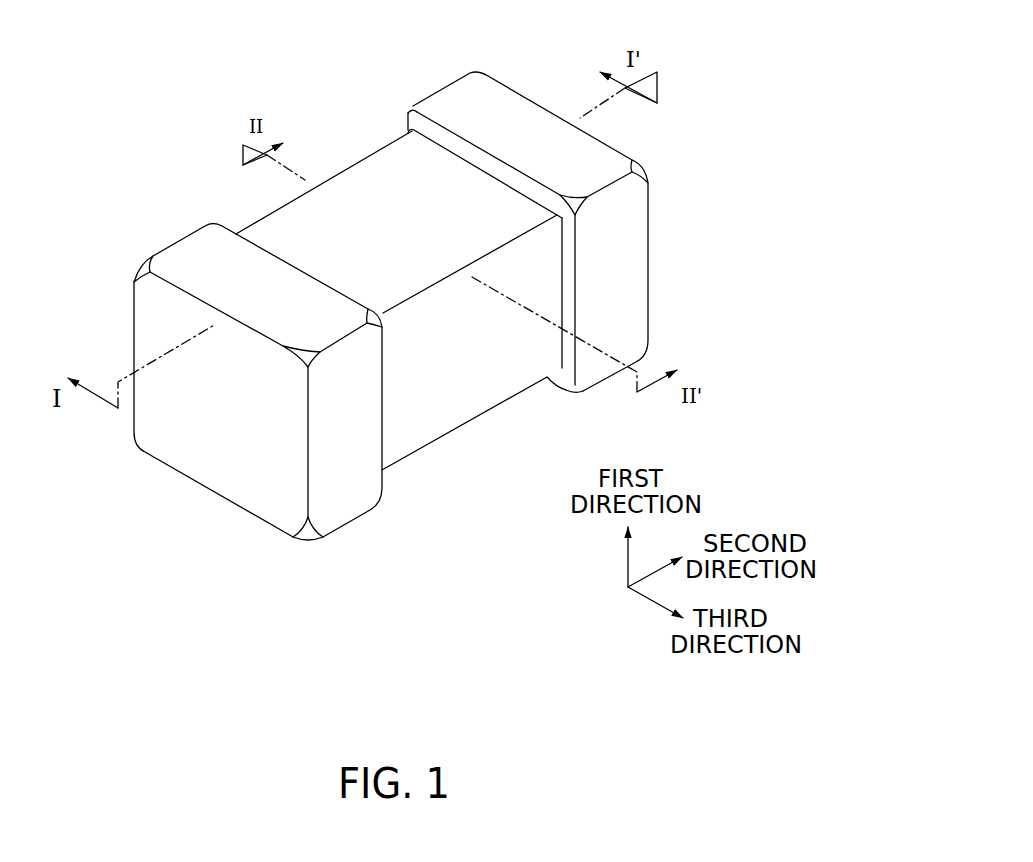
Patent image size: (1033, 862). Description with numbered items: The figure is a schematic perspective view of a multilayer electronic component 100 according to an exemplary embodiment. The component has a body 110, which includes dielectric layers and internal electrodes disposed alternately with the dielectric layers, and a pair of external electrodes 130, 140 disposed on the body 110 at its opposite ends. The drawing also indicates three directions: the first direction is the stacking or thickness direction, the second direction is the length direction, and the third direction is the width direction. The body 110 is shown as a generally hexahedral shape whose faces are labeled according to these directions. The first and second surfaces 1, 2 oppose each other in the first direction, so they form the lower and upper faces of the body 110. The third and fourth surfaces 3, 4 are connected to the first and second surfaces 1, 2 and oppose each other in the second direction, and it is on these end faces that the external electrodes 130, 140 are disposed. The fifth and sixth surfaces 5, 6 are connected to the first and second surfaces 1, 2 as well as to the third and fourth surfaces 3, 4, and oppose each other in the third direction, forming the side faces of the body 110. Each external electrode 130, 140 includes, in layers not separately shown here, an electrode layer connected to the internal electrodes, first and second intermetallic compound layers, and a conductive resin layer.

The multilayer electronic component 100 is at (173, 40).
The body 110 is at (268, 238).
The external electrode 130 is at (193, 255).
The external electrode 140 is at (448, 108).
The first surface 1 is at (432, 393).
The second surface 2 is at (407, 183).
The third surface 3 is at (230, 437).
The fourth surface 4 is at (597, 247).
The fifth surface 5 is at (490, 363).
The sixth surface 6 is at (355, 210).